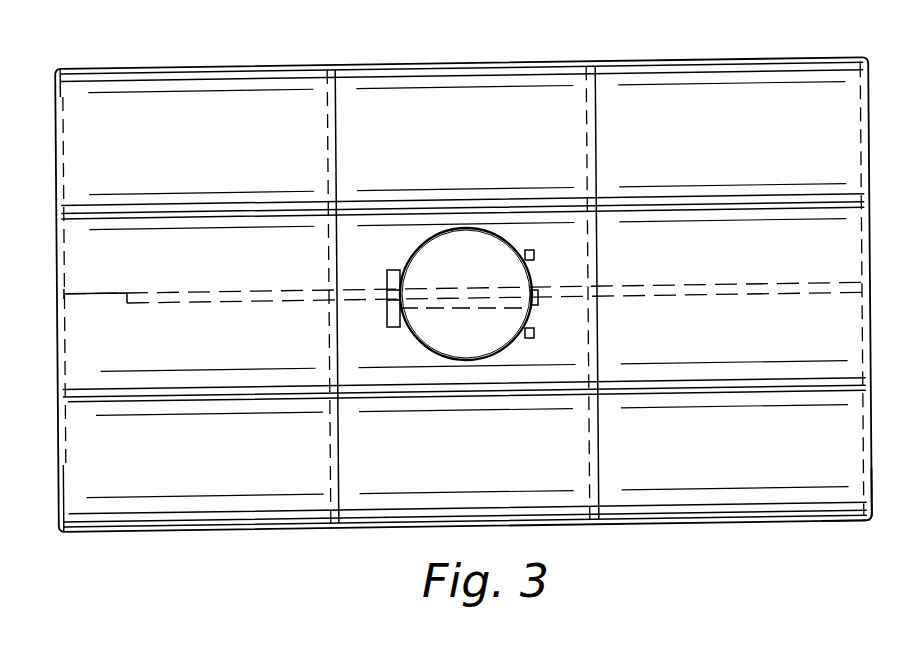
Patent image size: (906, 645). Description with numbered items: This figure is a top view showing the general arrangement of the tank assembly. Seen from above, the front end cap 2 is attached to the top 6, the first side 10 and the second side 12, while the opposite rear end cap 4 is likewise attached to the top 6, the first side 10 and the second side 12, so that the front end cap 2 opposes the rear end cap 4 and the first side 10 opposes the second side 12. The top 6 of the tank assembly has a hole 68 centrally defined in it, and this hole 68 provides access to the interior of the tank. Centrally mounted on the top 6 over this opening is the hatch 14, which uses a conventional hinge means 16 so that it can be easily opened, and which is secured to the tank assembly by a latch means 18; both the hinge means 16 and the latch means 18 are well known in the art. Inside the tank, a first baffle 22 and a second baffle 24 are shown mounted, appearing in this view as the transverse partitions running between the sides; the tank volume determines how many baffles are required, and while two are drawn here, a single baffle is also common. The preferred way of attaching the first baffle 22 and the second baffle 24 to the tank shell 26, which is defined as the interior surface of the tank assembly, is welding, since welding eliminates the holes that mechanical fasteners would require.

The front end cap 2 is at (57, 93).
The rear end cap 4 is at (874, 487).
The top 6 is at (839, 230).
The first side 10 is at (668, 526).
The second side 12 is at (678, 60).
The hatch 14 is at (494, 232).
The hinge means 16 is at (529, 338).
The latch means 18 is at (394, 328).
The first baffle 22 is at (335, 130).
The second baffle 24 is at (598, 103).
The tank shell 26 is at (792, 58).
The hole 68 is at (448, 253).